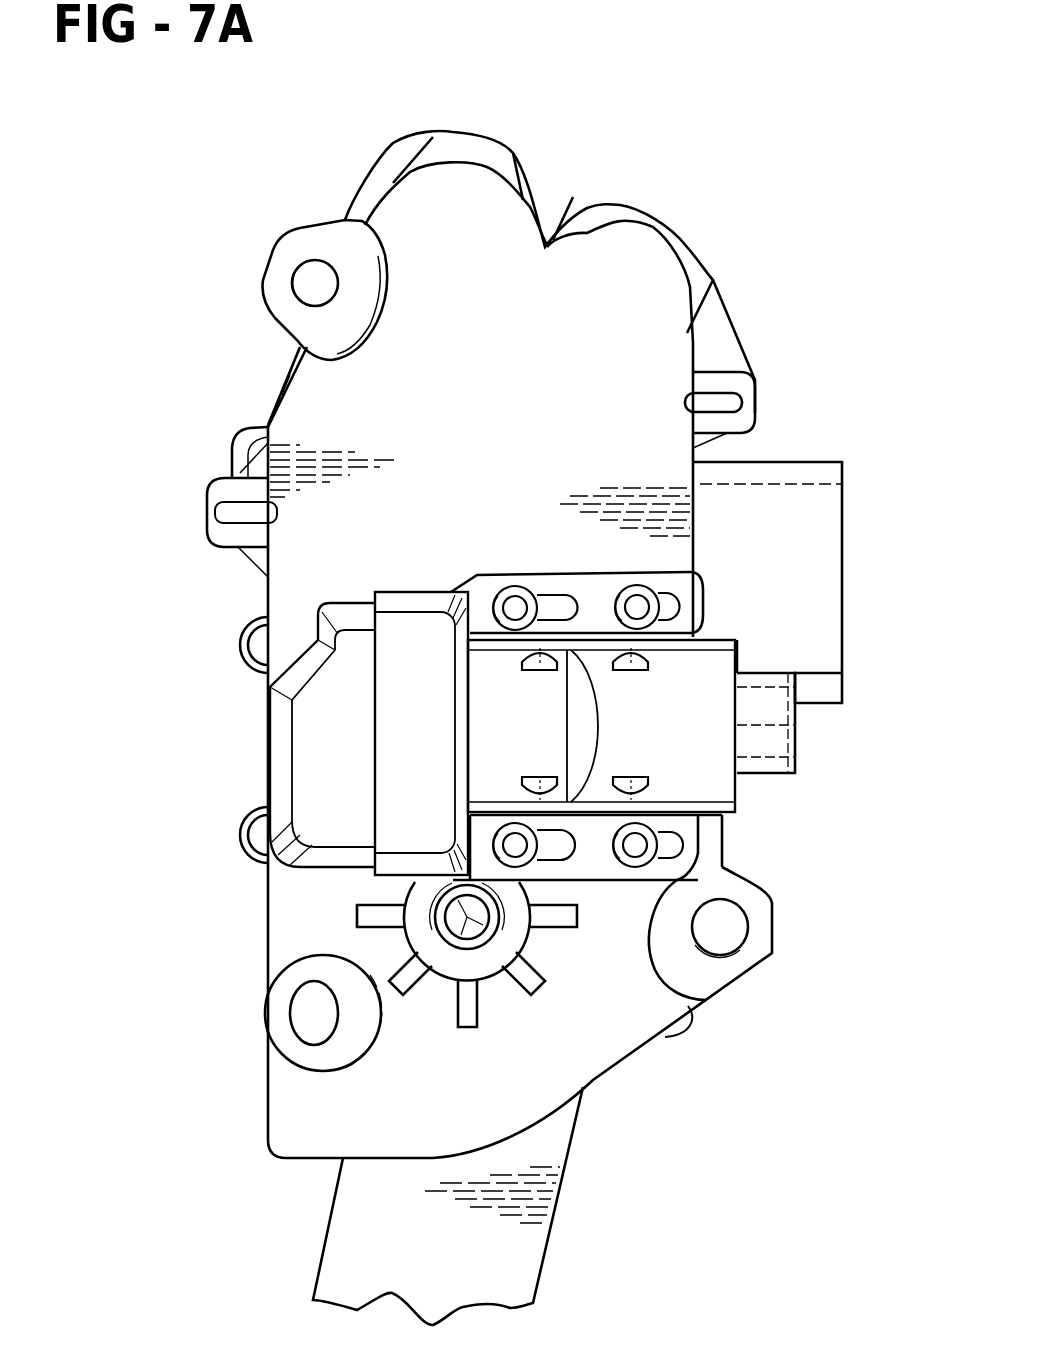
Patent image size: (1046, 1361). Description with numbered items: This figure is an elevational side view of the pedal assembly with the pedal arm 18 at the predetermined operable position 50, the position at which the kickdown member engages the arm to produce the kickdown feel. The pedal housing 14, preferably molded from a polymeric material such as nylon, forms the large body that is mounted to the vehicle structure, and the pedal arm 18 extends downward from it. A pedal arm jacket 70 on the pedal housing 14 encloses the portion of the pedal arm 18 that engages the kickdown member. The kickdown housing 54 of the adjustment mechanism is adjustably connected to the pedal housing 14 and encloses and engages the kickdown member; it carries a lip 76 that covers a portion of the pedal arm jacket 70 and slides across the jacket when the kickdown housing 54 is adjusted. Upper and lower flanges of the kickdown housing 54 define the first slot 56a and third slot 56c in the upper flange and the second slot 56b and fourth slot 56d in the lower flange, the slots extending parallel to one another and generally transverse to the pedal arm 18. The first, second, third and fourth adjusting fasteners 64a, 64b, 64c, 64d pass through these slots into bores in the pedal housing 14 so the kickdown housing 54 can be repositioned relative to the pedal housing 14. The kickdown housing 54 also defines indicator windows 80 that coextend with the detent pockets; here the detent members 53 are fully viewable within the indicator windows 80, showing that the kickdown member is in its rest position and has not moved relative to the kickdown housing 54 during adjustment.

The pedal housing 14 is at (575, 297).
The pedal arm 18 is at (315, 1262).
The predetermined operable position 50 is at (557, 1251).
The detent members 53 is at (617, 663).
The kickdown housing 54 is at (497, 717).
The first slot 56a is at (553, 605).
The second slot 56b is at (556, 860).
The third slot 56c is at (672, 605).
The fourth slot 56d is at (669, 862).
The first adjusting fastener 64a is at (512, 585).
The second adjusting fastener 64b is at (513, 868).
The third adjusting fastener 64c is at (633, 584).
The fourth adjusting fastener 64d is at (625, 866).
The pedal arm jacket 70 is at (310, 735).
The lip 76 is at (405, 640).
The indicator windows 80 is at (519, 661).